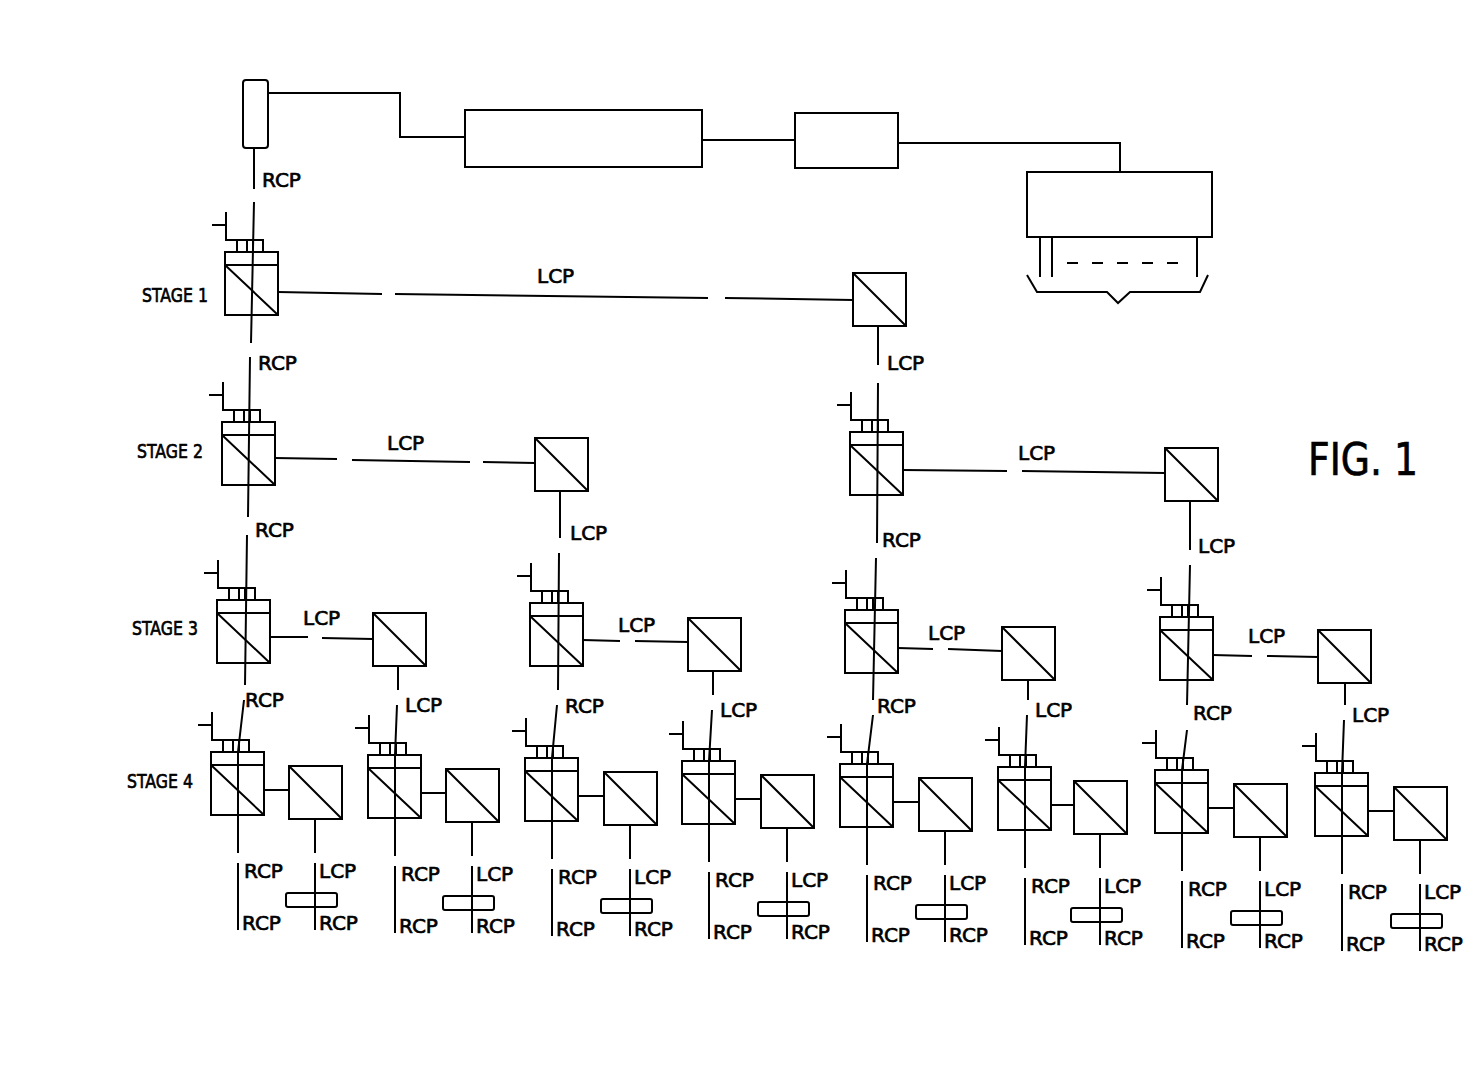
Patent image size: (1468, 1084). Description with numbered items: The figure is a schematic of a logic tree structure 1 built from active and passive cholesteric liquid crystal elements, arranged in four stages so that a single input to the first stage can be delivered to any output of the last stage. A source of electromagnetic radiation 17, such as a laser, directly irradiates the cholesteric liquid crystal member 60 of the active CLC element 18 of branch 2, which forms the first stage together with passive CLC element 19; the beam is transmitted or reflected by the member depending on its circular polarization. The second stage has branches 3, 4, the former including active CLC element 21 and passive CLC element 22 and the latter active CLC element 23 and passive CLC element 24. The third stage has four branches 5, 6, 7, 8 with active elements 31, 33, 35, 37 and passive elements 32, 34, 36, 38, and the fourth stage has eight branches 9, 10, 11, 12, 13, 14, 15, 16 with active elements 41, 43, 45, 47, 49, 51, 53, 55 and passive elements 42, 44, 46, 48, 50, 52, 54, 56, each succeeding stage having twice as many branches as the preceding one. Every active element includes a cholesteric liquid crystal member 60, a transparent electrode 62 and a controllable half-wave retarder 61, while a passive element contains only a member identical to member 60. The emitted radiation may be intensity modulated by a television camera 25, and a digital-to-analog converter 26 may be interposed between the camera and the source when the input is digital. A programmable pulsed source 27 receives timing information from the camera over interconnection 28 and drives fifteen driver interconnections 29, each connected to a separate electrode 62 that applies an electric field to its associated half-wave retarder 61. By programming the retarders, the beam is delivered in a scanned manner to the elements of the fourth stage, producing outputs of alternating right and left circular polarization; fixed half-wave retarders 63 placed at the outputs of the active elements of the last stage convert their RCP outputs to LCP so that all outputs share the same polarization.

The logic tree structure 1 is at (910, 237).
The branch 2 is at (642, 278).
The branch 3 is at (432, 422).
The branch 4 is at (1070, 443).
The branch 5 is at (337, 587).
The branch 6 is at (637, 593).
The branch 7 is at (963, 610).
The branch 8 is at (1277, 617).
The branch 9 is at (297, 738).
The branch 10 is at (450, 742).
The branch 11 is at (618, 738).
The branch 12 is at (779, 738).
The branch 13 is at (926, 745).
The branch 14 is at (1095, 740).
The branch 15 is at (1252, 743).
The branch 16 is at (1414, 745).
The source of electromagnetic radiation 17 is at (268, 138).
The active CLC element 18 is at (278, 277).
The passive CLC element 19 is at (906, 308).
The active CLC element 21 is at (233, 485).
The passive CLC element 22 is at (553, 490).
The active CLC element 23 is at (903, 457).
The passive CLC element 24 is at (1165, 463).
The television camera 25 is at (833, 170).
The digital-to-analog converter 26 is at (642, 167).
The programmable pulsed source 27 is at (1212, 197).
The interconnection 28 is at (963, 145).
The driver interconnection 29 is at (751, 485).
The active CLC element 31 is at (227, 663).
The passive CLC element 32 is at (388, 666).
The active CLC element 33 is at (545, 666).
The passive CLC element 34 is at (701, 671).
The active CLC element 35 is at (846, 659).
The passive CLC element 36 is at (1056, 638).
The active CLC element 37 is at (1161, 670).
The passive CLC element 38 is at (1372, 650).
The active CLC element 41 is at (221, 815).
The passive CLC element 42 is at (307, 820).
The active CLC element 43 is at (378, 818).
The passive CLC element 44 is at (464, 823).
The active CLC element 45 is at (535, 821).
The passive CLC element 46 is at (622, 826).
The active CLC element 47 is at (692, 824).
The passive CLC element 48 is at (779, 829).
The active CLC element 49 is at (850, 827).
The passive CLC element 50 is at (937, 832).
The active CLC element 51 is at (1008, 830).
The passive CLC element 52 is at (1092, 835).
The active CLC element 53 is at (1165, 833).
The passive CLC element 54 is at (1252, 838).
The active CLC element 55 is at (1325, 836).
The passive CLC element 56 is at (1412, 841).
The cholesteric liquid crystal member 60 is at (267, 313).
The controllable half-wave retarder 61 is at (226, 260).
The transparent electrode 62 is at (263, 245).
The fixed half-wave retarder 63 is at (286, 899).